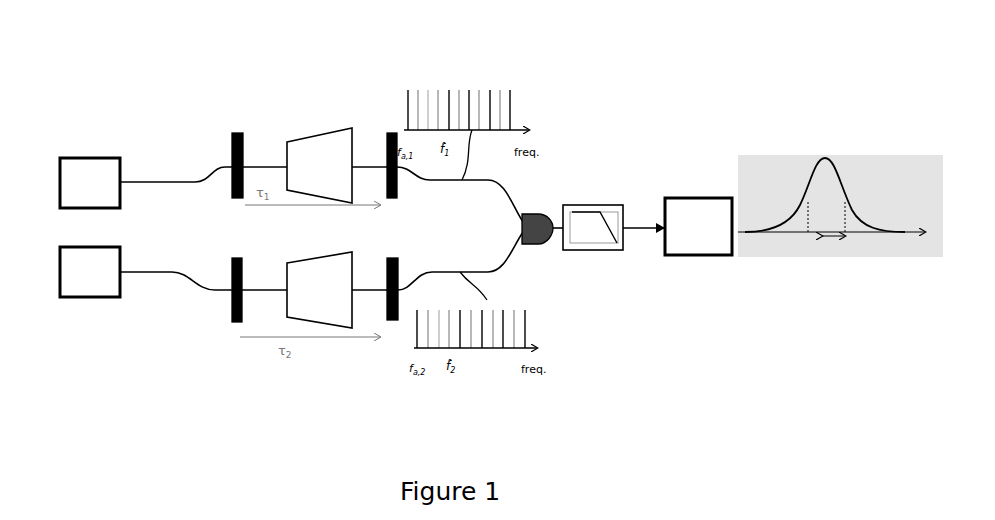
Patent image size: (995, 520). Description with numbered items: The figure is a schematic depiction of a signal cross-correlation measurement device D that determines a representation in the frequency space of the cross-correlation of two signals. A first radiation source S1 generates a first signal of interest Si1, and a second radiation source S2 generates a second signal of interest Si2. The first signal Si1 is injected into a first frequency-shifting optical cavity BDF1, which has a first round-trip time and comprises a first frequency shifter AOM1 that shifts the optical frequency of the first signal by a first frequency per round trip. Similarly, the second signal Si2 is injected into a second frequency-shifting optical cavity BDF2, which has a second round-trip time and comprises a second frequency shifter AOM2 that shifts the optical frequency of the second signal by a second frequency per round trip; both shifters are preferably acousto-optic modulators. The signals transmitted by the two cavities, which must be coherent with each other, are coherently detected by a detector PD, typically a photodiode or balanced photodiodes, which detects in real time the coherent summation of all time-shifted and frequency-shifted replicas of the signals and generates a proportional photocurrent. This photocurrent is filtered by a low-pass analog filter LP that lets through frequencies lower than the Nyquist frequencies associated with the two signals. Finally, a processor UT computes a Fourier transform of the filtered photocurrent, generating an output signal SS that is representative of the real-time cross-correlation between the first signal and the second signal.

The signal cross-correlation measurement device D is at (197, 87).
The first radiation source S1 is at (92, 157).
The second radiation source S2 is at (90, 298).
The first signal of interest Si1 is at (158, 181).
The second signal of interest Si2 is at (165, 271).
The first frequency-shifting optical cavity BDF1 is at (262, 112).
The second frequency-shifting optical cavity BDF2 is at (260, 352).
The first frequency shifter AOM1 is at (338, 112).
The second frequency shifter AOM2 is at (329, 243).
The detector PD is at (537, 212).
The low-pass analog filter LP is at (600, 205).
The processor UT is at (695, 199).
The output signal SS is at (822, 158).